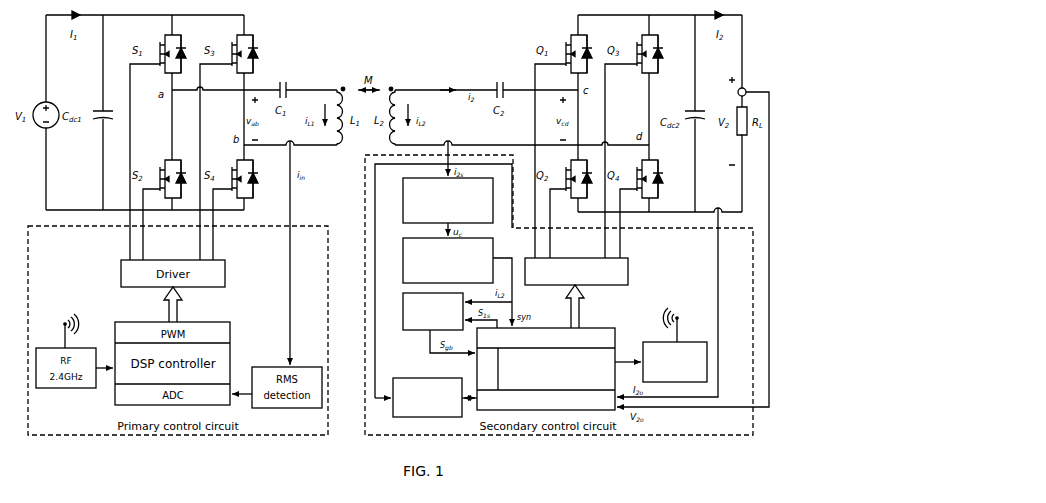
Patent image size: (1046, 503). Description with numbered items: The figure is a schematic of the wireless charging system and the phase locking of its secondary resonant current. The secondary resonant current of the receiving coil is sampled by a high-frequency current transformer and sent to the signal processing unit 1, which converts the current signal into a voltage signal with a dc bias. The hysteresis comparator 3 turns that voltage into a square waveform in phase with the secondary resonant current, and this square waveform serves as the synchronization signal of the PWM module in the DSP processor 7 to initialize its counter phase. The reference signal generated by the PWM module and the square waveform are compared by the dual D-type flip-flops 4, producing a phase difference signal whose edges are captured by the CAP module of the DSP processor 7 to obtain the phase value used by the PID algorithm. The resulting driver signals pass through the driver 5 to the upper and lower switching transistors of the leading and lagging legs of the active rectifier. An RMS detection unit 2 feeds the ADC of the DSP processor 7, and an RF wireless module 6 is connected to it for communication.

The signal processing unit 1 is at (438, 200).
The RMS detection unit 2 is at (427, 387).
The hysteresis comparator 3 is at (438, 260).
The dual D-type flip-flops 4 is at (423, 311).
The driver 5 is at (588, 271).
The RF wireless module 6 is at (675, 345).
The DSP processor 7 is at (546, 358).